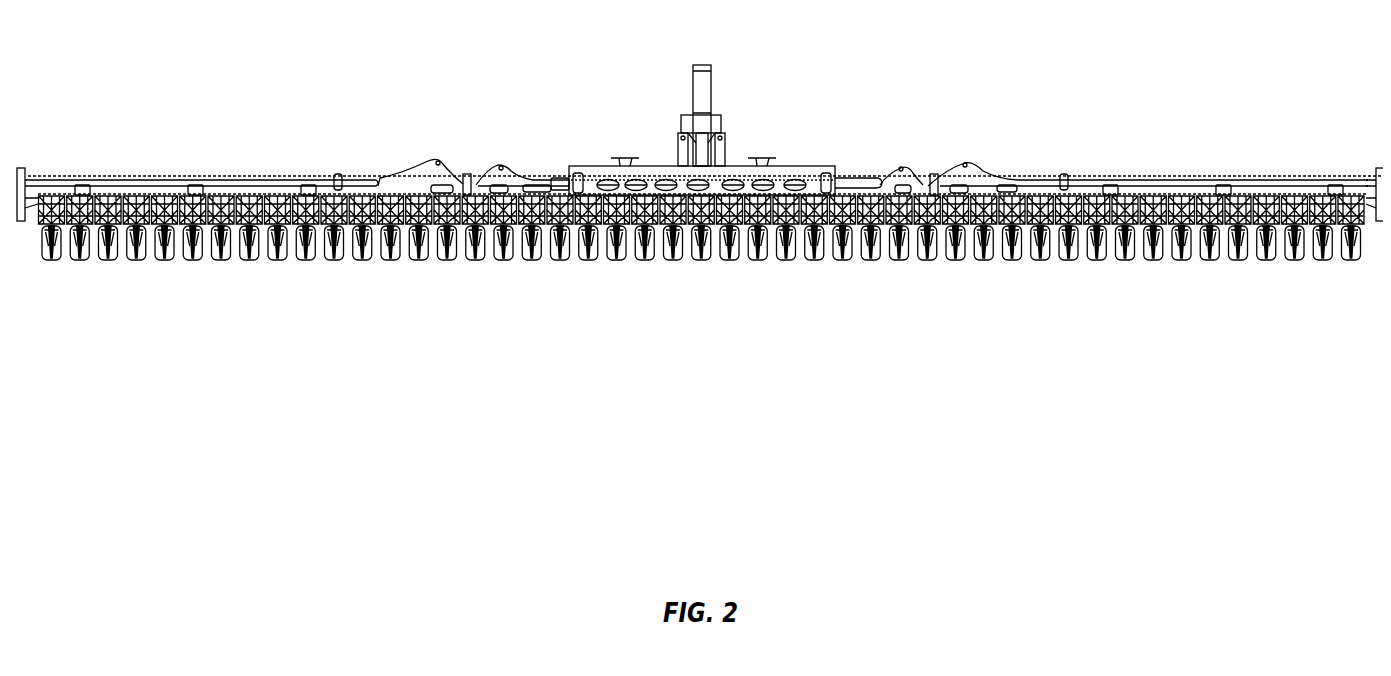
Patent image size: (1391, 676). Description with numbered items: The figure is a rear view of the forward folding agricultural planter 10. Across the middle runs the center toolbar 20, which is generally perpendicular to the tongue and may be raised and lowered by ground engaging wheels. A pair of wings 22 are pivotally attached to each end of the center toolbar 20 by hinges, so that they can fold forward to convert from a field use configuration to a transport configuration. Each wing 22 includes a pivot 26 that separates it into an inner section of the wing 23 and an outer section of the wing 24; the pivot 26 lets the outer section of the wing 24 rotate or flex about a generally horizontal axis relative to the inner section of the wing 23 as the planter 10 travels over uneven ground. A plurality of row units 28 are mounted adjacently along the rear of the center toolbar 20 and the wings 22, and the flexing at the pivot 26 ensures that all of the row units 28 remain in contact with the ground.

The agricultural planter 10 is at (547, 48).
The center toolbar 20 is at (806, 162).
The wing 22 is at (209, 169).
The inner section of the wing 23 is at (549, 165).
The outer section of the wing 24 is at (303, 167).
The pivot 26 is at (470, 166).
The row unit 28 is at (434, 254).